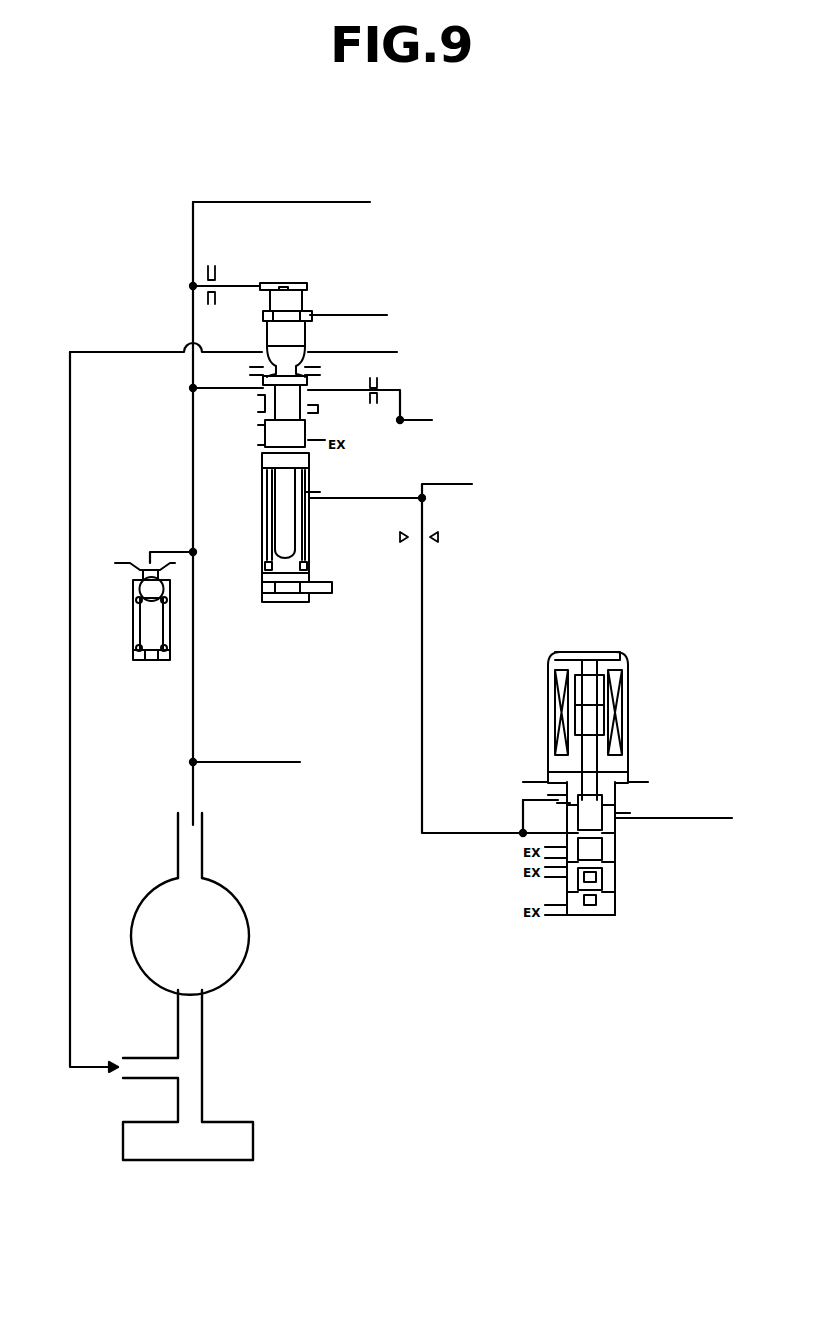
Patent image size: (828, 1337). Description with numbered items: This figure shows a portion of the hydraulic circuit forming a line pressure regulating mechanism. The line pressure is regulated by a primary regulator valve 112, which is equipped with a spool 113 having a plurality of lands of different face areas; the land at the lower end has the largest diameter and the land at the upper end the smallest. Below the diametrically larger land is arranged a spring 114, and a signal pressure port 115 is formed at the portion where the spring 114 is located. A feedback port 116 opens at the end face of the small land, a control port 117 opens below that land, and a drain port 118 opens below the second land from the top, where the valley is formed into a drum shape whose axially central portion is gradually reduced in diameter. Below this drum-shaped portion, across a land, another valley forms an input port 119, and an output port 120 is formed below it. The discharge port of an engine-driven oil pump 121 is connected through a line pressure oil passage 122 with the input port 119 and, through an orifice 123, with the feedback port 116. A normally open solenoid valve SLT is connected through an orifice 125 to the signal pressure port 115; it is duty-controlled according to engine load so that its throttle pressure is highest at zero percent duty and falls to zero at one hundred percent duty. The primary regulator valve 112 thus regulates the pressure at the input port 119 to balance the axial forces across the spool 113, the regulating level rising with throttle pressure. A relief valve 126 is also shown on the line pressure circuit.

The primary regulator valve 112 is at (312, 604).
The spool 113 is at (272, 462).
The spring 114 is at (310, 567).
The signal pressure port 115 is at (318, 502).
The feedback port 116 is at (262, 282).
The control port 117 is at (308, 313).
The drain port 118 is at (262, 345).
The input port 119 is at (263, 397).
The output port 120 is at (312, 422).
The oil pump 121 is at (145, 903).
The line pressure oil passage 122 is at (193, 705).
The orifice 123 is at (192, 280).
The orifice 125 is at (437, 536).
The relief valve 126 is at (141, 670).
The solenoid valve SLT is at (628, 717).